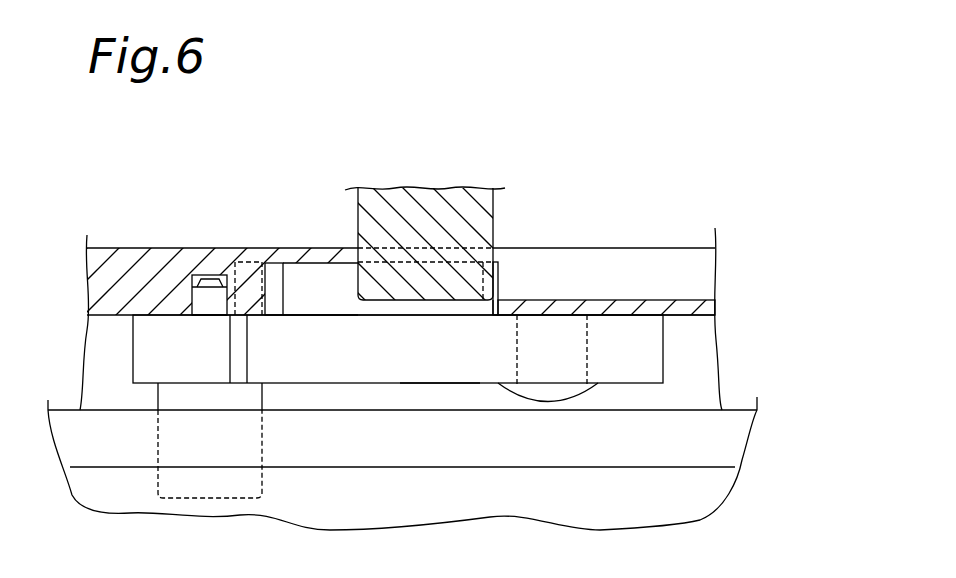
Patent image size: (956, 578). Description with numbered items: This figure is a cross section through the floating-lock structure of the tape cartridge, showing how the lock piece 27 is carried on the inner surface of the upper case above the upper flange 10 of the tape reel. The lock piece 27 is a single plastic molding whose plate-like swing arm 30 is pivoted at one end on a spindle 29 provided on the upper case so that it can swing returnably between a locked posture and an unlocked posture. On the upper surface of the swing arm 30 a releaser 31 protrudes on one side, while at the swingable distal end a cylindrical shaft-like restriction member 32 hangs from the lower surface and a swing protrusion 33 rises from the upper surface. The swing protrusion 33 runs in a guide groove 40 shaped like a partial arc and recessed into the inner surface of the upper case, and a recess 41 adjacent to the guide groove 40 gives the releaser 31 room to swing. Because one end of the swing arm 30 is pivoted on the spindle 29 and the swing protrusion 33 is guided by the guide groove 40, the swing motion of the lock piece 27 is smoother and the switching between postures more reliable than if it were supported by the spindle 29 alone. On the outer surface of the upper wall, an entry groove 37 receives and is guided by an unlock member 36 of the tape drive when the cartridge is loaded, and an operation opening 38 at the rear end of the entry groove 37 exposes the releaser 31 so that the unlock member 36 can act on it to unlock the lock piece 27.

The upper flange 10 is at (728, 425).
The lock piece 27 is at (440, 384).
The spindle 29 is at (587, 342).
The swing arm 30 is at (363, 370).
The releaser 31 is at (328, 277).
The restriction member 32 is at (262, 482).
The swing protrusion 33 is at (211, 292).
The unlock member 36 is at (497, 230).
The entry groove 37 is at (672, 298).
The operation opening 38 is at (498, 300).
The guide groove 40 is at (195, 298).
The recess 41 is at (272, 262).